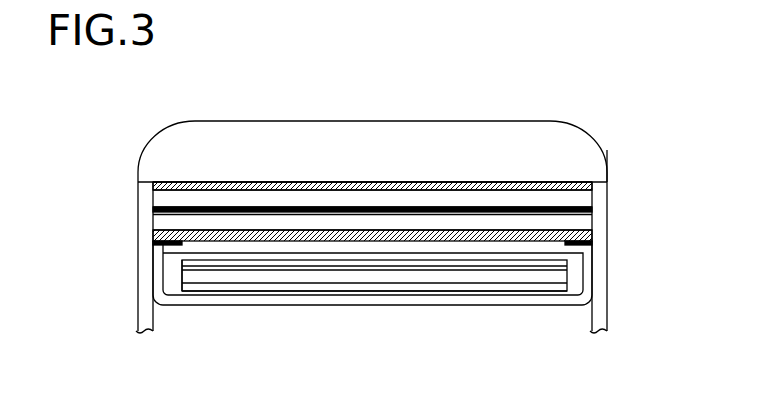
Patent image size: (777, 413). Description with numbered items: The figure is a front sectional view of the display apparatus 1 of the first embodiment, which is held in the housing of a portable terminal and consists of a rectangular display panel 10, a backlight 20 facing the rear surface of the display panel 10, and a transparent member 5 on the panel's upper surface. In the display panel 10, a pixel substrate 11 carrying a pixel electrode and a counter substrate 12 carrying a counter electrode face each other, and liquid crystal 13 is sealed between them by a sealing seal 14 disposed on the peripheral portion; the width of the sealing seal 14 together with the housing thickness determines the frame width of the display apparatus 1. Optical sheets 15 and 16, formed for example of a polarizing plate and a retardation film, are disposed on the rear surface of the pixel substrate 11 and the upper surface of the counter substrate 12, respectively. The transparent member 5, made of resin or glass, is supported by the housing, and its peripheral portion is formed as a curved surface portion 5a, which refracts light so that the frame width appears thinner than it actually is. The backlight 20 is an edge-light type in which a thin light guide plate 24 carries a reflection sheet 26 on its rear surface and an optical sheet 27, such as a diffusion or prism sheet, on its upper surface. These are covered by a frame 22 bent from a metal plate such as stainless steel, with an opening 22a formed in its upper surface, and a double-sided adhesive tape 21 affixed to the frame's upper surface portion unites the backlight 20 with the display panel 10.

The display apparatus 1 is at (650, 90).
The transparent member 5 is at (475, 120).
The curved surface portion 5a is at (603, 144).
The display panel 10 is at (588, 203).
The pixel substrate 11 is at (250, 197).
The counter substrate 12 is at (296, 198).
The liquid crystal 13 is at (210, 214).
The sealing seal 14 is at (173, 207).
The optical sheet 15 is at (350, 231).
The optical sheet 16 is at (388, 180).
The backlight 20 is at (590, 270).
The double-sided adhesive tape 21 is at (593, 248).
The frame 22 is at (380, 305).
The opening 22a is at (213, 255).
The light guide plate 24 is at (287, 283).
The reflection sheet 26 is at (442, 291).
The optical sheet 27 is at (508, 266).